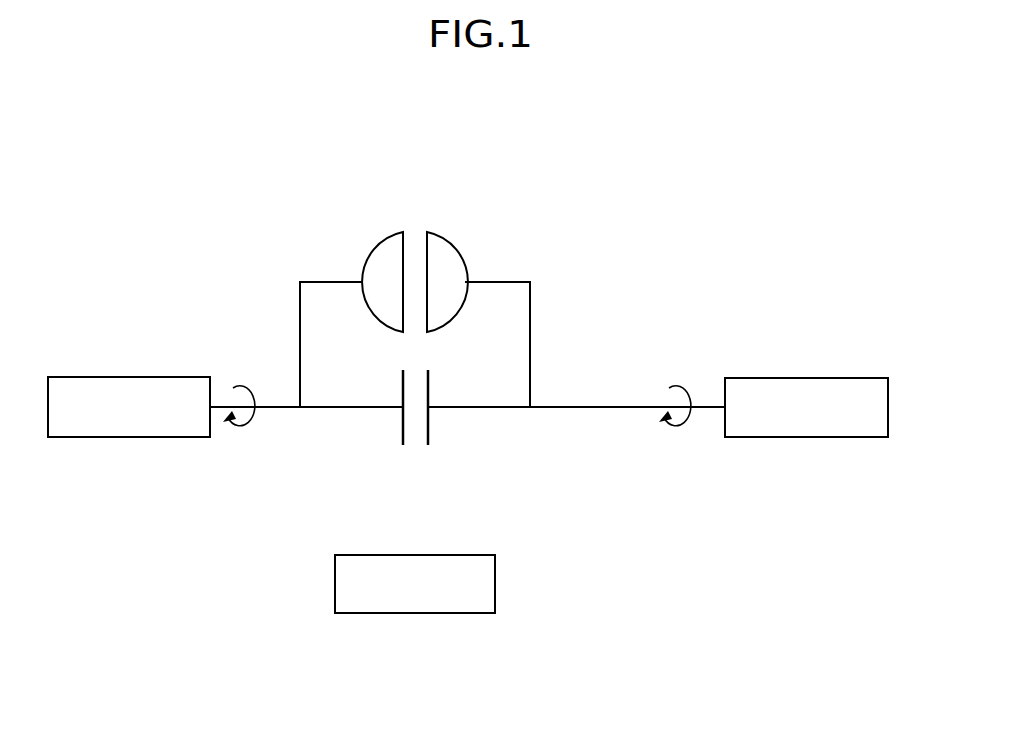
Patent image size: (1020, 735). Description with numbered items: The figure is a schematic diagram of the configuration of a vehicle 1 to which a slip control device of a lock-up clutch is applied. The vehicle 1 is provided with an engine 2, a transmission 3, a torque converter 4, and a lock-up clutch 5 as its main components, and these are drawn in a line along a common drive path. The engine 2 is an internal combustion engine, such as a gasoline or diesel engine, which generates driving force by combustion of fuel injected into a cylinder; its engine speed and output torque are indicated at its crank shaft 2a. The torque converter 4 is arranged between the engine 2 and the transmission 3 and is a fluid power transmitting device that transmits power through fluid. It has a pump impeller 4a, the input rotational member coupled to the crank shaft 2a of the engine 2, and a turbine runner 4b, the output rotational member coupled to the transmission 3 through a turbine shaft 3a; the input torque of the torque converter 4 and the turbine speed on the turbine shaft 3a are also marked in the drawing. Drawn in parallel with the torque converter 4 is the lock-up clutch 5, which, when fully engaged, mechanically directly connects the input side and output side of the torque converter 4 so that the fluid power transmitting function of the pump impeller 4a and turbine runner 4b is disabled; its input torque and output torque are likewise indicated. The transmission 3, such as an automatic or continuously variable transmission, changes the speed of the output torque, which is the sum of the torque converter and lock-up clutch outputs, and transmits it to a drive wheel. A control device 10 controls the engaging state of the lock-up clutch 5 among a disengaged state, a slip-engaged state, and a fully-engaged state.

The vehicle 1 is at (711, 138).
The engine 2 is at (126, 377).
The crank shaft 2a is at (213, 410).
The transmission 3 is at (810, 377).
The turbine shaft 3a is at (608, 408).
The torque converter 4 is at (422, 207).
The pump impeller 4a is at (384, 240).
The turbine runner 4b is at (446, 240).
The lock-up clutch 5 is at (413, 472).
The control device 10 is at (415, 613).